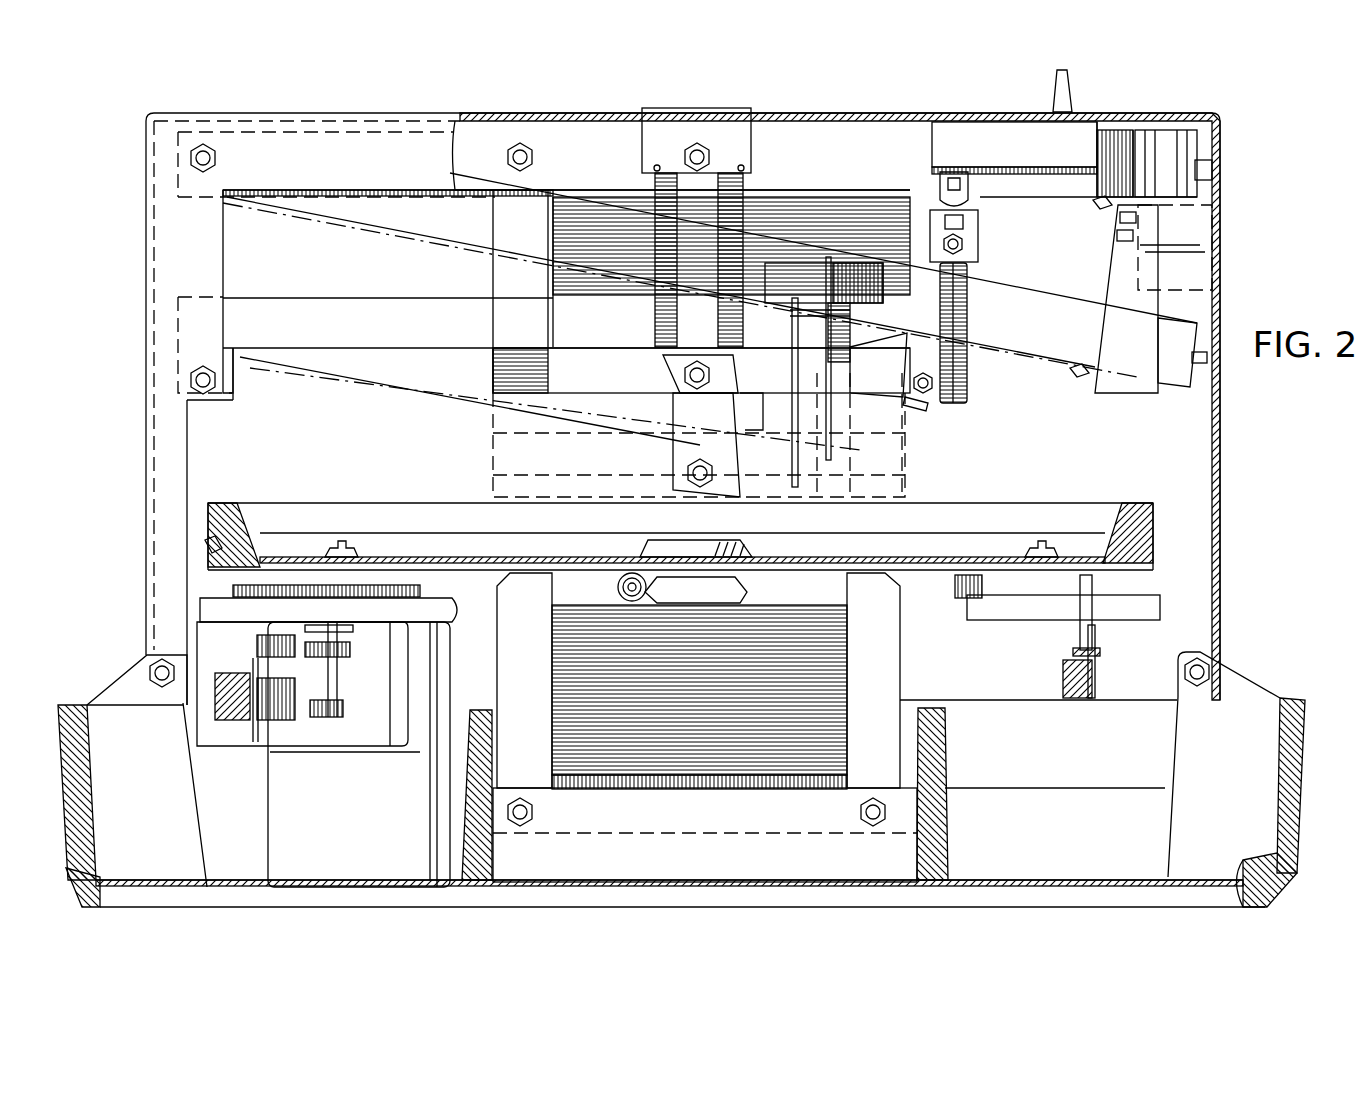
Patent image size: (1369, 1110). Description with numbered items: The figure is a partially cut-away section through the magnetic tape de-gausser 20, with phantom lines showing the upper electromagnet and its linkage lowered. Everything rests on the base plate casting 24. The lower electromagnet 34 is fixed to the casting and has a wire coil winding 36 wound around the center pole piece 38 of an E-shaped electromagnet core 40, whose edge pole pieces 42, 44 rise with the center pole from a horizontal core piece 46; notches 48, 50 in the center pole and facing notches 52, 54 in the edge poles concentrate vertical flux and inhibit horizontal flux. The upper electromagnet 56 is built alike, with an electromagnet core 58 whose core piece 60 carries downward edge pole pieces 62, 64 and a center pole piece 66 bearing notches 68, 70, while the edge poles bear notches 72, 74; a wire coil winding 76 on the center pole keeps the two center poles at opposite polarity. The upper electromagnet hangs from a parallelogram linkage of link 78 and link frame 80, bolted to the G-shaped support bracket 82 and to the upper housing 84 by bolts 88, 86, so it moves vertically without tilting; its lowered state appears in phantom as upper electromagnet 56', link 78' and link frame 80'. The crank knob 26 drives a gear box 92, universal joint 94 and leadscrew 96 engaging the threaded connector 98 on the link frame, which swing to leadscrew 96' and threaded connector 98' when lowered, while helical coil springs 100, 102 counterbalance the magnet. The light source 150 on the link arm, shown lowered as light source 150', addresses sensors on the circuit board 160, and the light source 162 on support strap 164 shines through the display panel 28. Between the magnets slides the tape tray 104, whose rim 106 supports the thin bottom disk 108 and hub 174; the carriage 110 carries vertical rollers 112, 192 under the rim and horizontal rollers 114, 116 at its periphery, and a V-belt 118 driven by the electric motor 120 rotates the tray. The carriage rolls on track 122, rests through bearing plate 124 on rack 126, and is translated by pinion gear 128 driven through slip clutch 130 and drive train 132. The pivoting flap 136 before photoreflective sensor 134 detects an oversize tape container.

The magnetic tape de-gausser 20 is at (1283, 600).
The base plate casting 24 is at (1300, 820).
The crank knob 26 is at (1072, 90).
The display panel 28 is at (1222, 163).
The lower electromagnet 34 is at (900, 700).
The wire coil winding 36 is at (560, 665).
The center pole piece 38 is at (742, 592).
The electromagnet core 40 is at (900, 658).
The edge pole piece 42 is at (893, 622).
The edge pole piece 44 is at (515, 608).
The horizontal core piece 46 is at (718, 790).
The notch 48 is at (745, 577).
The notch 50 is at (655, 565).
The notch 52 is at (850, 578).
The notch 54 is at (548, 563).
The upper electromagnet 56 is at (566, 291).
The lowered position of upper electromagnet 56' is at (740, 435).
The electromagnet core 58 is at (548, 265).
The core piece 60 is at (538, 130).
The edge pole piece 62 is at (548, 252).
The edge pole piece 64 is at (880, 400).
The center pole piece 66 is at (710, 393).
The notch 68 is at (678, 393).
The notch 70 is at (745, 393).
The notch 72 is at (550, 393).
The notch 74 is at (855, 397).
The wire coil winding 76 is at (560, 262).
The link 78 is at (303, 277).
The lowered position of link 78' is at (550, 403).
The link frame 80 is at (798, 248).
The lowered position of link frame 80' is at (680, 287).
The support bracket 82 is at (493, 370).
The upper housing 84 is at (285, 113).
The bolt 86 is at (190, 157).
The bolt 88 is at (190, 380).
The gear box 92 is at (962, 125).
The universal joint 94 is at (975, 205).
The leadscrew 96 is at (978, 346).
The pivoted position of leadscrew 96' is at (919, 417).
The threaded connector 98 is at (981, 238).
The lowered position of threaded connector 98' is at (943, 424).
The helical coil spring 100 is at (657, 165).
The helical coil spring 102 is at (741, 165).
The tape tray 104 is at (1082, 503).
The rim 106 is at (1135, 508).
The bottom disk 108 is at (962, 560).
The carriage 110 is at (1045, 622).
The vertical roller 112 is at (955, 588).
The horizontal roller 114 is at (340, 541).
The horizontal roller 116 is at (205, 552).
The V-belt 118 is at (205, 540).
The electric motor 120 is at (1093, 590).
The track 122 is at (1096, 667).
The bearing plate 124 is at (230, 672).
The rack 126 is at (232, 720).
The pinion gear 128 is at (278, 720).
The slip clutch 130 is at (230, 640).
The drive train 132 is at (328, 717).
The photoreflective sensor 134 is at (826, 360).
The tape height sensor pivoting flap 136 is at (792, 430).
The standard magnet separation light source 150 is at (1083, 225).
The lowered position of light source 150' is at (1051, 384).
The standard magnet separation circuit board 160 is at (1138, 395).
The magnet height indicator light source 162 is at (1203, 180).
The support strap 164 is at (1180, 140).
The hub 174 is at (642, 548).
The vertical roller 192 is at (618, 587).